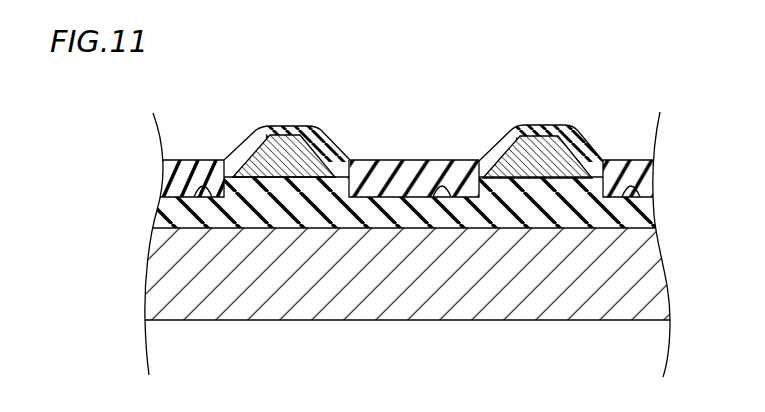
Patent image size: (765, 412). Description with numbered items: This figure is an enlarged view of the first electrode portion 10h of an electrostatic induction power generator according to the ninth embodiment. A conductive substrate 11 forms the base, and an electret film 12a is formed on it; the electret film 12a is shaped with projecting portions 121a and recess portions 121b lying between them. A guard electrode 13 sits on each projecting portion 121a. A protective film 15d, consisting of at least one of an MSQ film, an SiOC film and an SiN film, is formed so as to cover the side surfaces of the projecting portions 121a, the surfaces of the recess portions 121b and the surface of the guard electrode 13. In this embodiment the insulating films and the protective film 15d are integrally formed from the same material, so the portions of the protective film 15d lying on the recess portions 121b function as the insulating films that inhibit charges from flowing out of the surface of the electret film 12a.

The first electrode portion 10h is at (392, 194).
The substrate 11 is at (160, 283).
The electret film 12a is at (371, 268).
The projecting portions 121a is at (285, 183).
The recess portions 121b is at (212, 196).
The guard electrode 13 is at (296, 140).
The protective film 15d is at (413, 172).